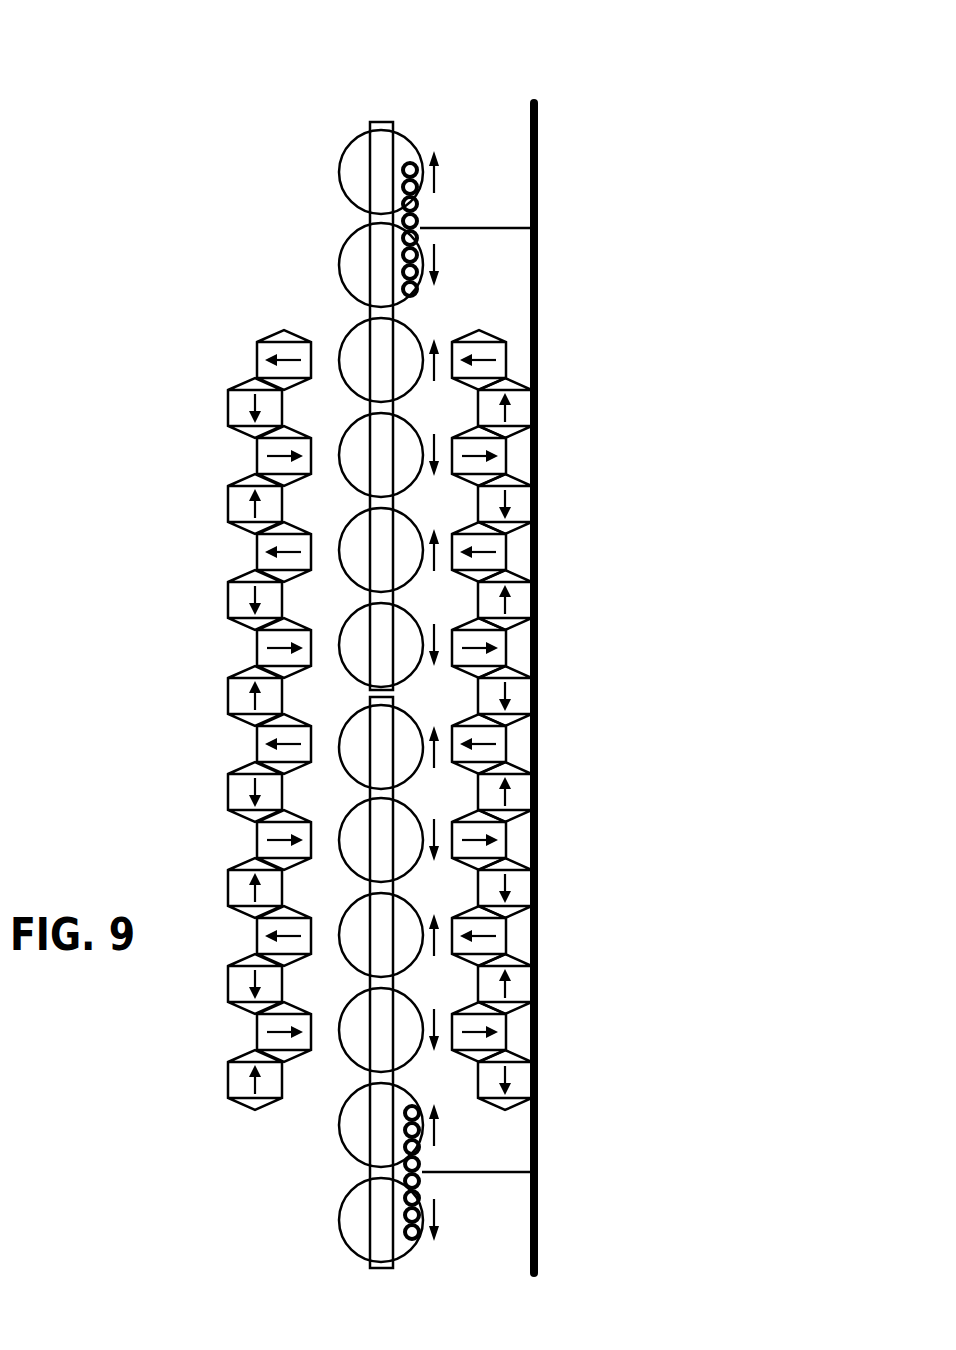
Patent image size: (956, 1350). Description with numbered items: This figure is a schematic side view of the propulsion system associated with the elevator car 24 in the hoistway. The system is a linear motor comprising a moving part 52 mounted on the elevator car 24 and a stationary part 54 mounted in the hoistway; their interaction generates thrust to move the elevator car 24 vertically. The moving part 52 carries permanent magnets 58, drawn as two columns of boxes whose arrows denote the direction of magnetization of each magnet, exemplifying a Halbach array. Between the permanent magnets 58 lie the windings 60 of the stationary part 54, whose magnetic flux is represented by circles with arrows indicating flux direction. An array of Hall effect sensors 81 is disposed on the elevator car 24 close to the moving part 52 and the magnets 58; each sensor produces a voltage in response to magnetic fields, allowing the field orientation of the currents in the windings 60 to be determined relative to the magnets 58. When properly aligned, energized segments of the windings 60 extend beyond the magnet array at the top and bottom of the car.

The stationary part 54 is at (383, 88).
The windings 60 is at (369, 121).
The moving part 52 is at (462, 1098).
The permanent magnets 58 is at (283, 330).
The Hall effect sensors 81 is at (420, 212).
The elevator car 24 is at (538, 287).